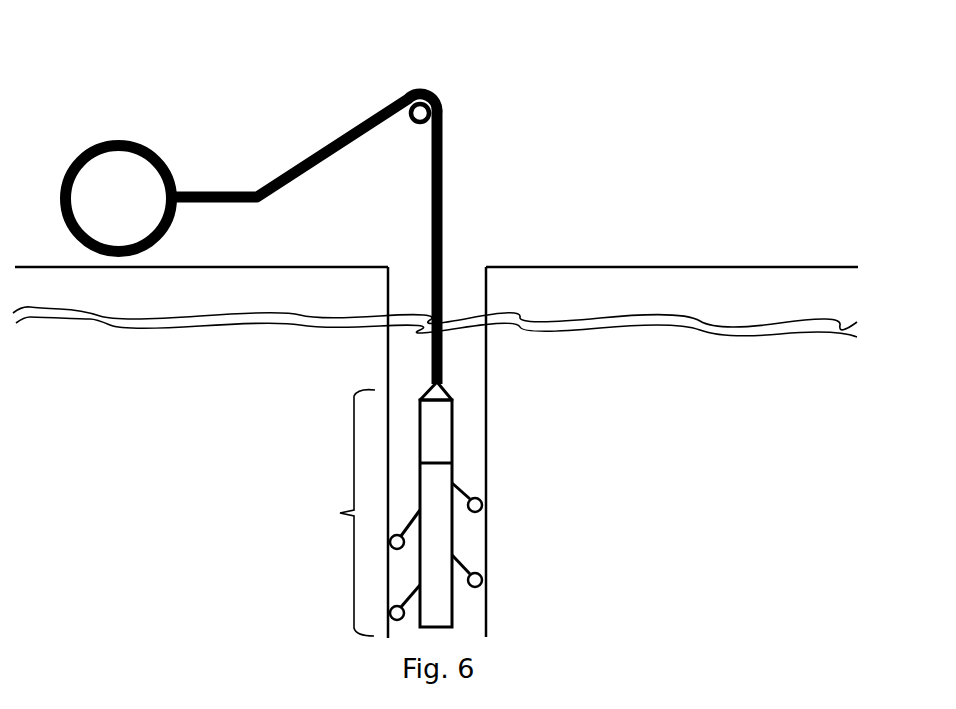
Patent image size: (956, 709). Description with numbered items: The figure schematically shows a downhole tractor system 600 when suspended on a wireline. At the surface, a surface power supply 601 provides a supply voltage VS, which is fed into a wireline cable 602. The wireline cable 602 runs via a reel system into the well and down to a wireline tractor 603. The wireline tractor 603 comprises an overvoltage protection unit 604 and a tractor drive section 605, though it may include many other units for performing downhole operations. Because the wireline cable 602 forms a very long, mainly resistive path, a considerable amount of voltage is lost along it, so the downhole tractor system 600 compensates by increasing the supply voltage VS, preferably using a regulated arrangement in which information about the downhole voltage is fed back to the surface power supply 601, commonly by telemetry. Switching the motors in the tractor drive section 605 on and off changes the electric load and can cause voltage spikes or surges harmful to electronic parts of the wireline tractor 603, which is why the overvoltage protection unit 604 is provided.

The downhole tractor system 600 is at (692, 75).
The surface power supply 601 is at (137, 210).
The wireline cable 602 is at (347, 130).
The wireline tractor 603 is at (340, 513).
The overvoltage protection unit 604 is at (453, 430).
The tractor drive section 605 is at (453, 540).